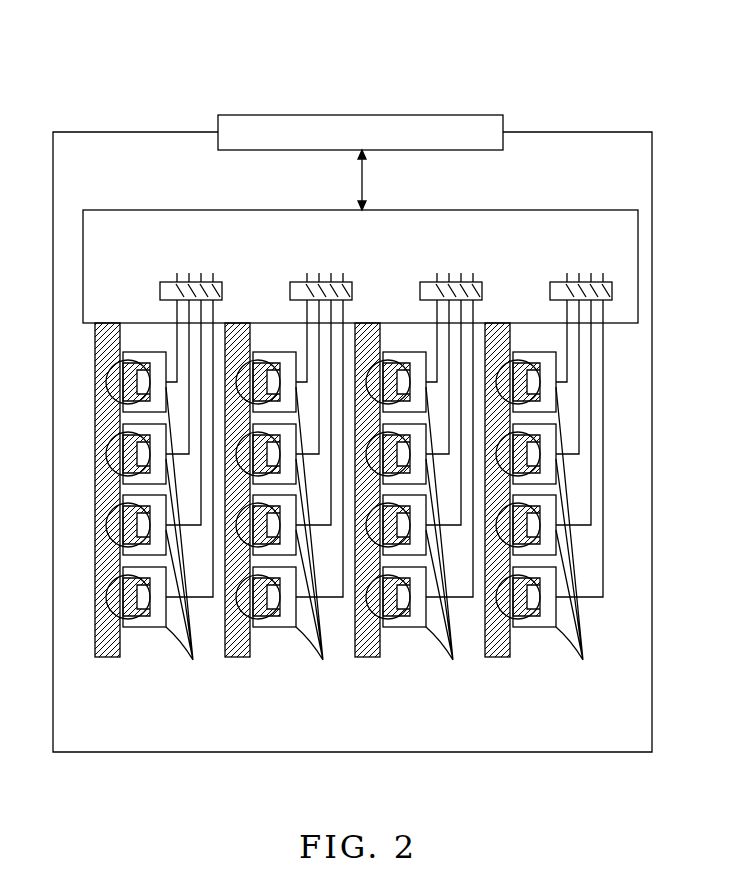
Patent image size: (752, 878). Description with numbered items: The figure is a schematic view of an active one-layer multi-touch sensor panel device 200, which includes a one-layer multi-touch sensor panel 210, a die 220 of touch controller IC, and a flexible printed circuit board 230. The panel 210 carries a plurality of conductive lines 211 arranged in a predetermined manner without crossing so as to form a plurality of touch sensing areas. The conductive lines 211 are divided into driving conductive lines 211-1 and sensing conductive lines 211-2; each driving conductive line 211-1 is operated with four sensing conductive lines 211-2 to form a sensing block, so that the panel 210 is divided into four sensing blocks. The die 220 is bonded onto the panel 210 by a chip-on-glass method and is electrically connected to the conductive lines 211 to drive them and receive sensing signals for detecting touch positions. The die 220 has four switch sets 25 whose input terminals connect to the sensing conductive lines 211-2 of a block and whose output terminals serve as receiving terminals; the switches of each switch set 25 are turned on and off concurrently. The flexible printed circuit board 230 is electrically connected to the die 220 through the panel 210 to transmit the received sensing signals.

The active one-layer multi-touch sensor panel device 200 is at (134, 34).
The one-layer multi-touch sensor panel 210 is at (353, 752).
The conductive lines 211 is at (332, 522).
The driving conductive line 211-1 is at (310, 500).
The sensing conductive line 211-2 is at (332, 493).
The die of touch controller IC 220 is at (150, 210).
The flexible printed circuit board 230 is at (360, 115).
The switch set 25 is at (365, 268).